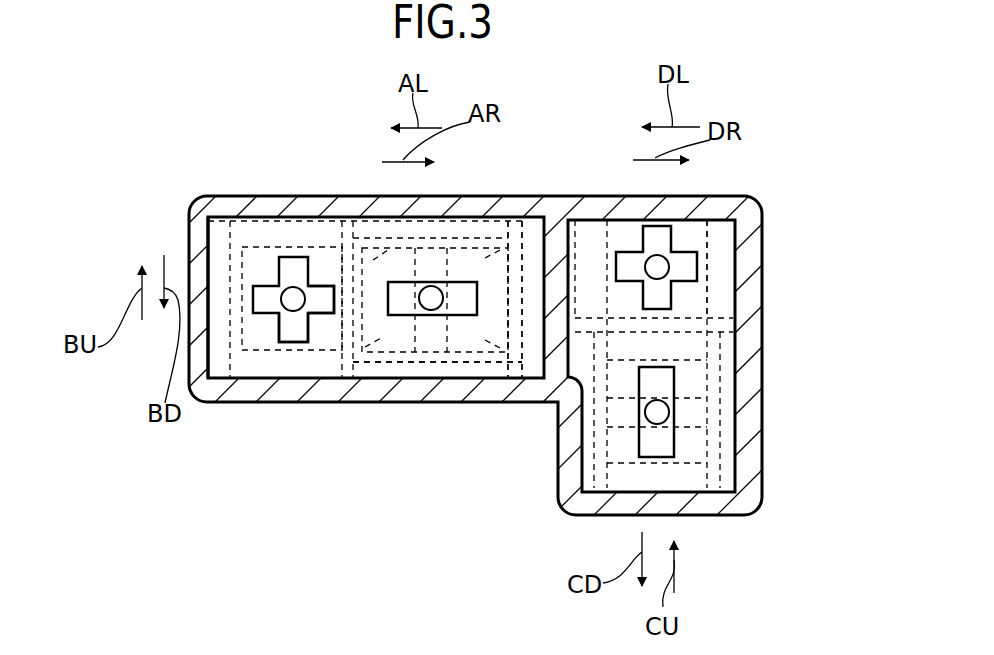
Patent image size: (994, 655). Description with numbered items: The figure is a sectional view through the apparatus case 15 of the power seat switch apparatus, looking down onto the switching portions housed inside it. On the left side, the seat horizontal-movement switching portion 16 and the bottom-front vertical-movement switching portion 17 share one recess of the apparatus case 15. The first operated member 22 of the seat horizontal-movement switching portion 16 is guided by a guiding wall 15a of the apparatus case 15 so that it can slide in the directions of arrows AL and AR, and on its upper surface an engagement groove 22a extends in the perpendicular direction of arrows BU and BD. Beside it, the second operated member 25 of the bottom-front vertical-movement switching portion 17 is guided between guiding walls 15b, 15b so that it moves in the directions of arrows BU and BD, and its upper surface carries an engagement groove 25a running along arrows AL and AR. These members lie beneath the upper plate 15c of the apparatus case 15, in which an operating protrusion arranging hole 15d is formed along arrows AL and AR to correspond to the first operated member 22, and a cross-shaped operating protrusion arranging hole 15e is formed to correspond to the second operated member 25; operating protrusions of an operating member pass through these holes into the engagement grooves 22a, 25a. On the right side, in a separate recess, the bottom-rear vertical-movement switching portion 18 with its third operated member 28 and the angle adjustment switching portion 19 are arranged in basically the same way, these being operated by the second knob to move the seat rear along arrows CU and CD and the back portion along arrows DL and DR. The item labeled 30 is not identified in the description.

The apparatus case 15 is at (523, 196).
The guiding wall 15a is at (382, 266).
The guiding walls 15b is at (260, 222).
The upper plate 15c is at (208, 235).
The operating protrusion arranging hole 15d is at (458, 288).
The cross-shaped operating protrusion arranging hole 15e is at (287, 337).
The seat horizontal-movement switching portion 16 is at (458, 368).
The bottom-front vertical-movement switching portion 17 is at (329, 370).
The bottom-rear vertical-movement switching portion 18 is at (697, 478).
The angle adjustment switching portion 19 is at (716, 232).
The first operated member 22 is at (500, 363).
The engagement groove 22a is at (423, 363).
The second operated member 25 is at (258, 355).
The engagement groove 25a is at (316, 303).
The third operated member 28 is at (683, 358).
The cross-shaped slider 30 is at (707, 287).